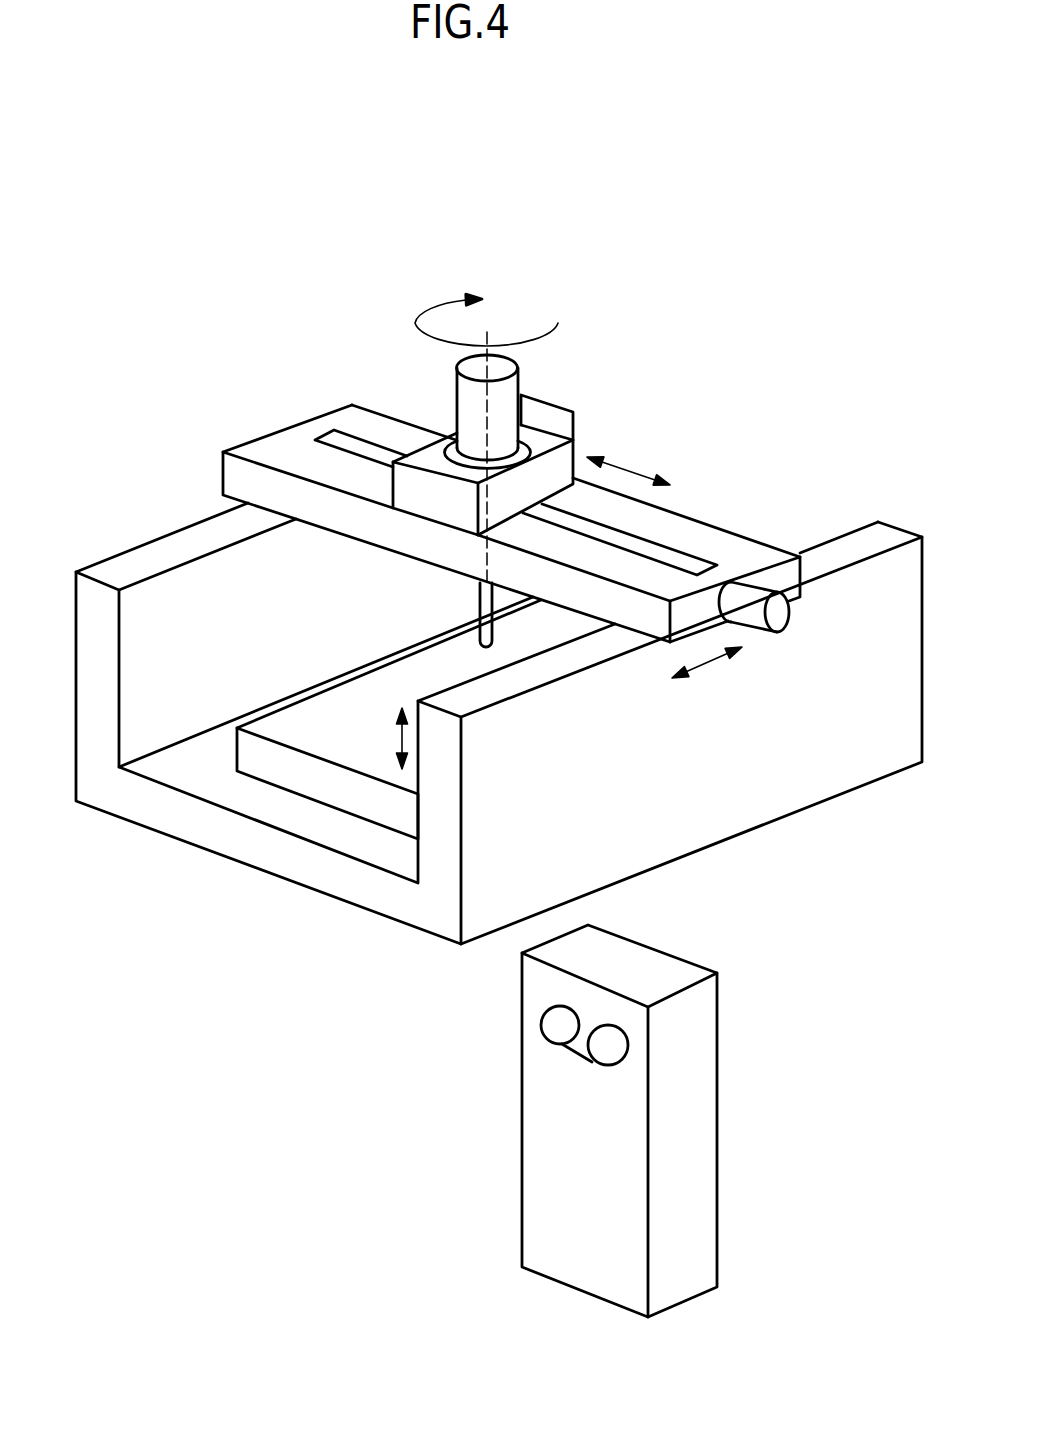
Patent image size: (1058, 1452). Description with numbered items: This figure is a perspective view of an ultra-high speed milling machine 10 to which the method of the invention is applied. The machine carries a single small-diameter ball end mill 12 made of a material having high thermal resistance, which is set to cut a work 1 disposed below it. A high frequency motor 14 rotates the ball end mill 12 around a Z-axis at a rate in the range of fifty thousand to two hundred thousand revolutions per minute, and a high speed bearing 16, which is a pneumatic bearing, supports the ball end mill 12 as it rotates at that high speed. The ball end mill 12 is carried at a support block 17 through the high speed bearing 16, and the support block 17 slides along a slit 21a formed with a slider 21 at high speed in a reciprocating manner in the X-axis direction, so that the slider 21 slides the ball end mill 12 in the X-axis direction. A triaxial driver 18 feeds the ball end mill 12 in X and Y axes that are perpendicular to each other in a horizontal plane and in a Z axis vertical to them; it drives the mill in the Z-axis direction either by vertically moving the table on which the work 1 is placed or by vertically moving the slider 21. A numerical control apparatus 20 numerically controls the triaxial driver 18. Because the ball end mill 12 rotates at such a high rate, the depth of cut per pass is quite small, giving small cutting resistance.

The work 1 is at (304, 726).
The milling machine 10 is at (200, 319).
The ball end mill 12 is at (506, 644).
The high frequency motor 14 is at (510, 412).
The high speed bearing 16 is at (444, 436).
The support block 17 is at (423, 490).
The triaxial driver 18 is at (734, 791).
The numerical control (NC) apparatus 20 is at (527, 1130).
The slider 21 is at (692, 533).
The slit 21a is at (667, 553).